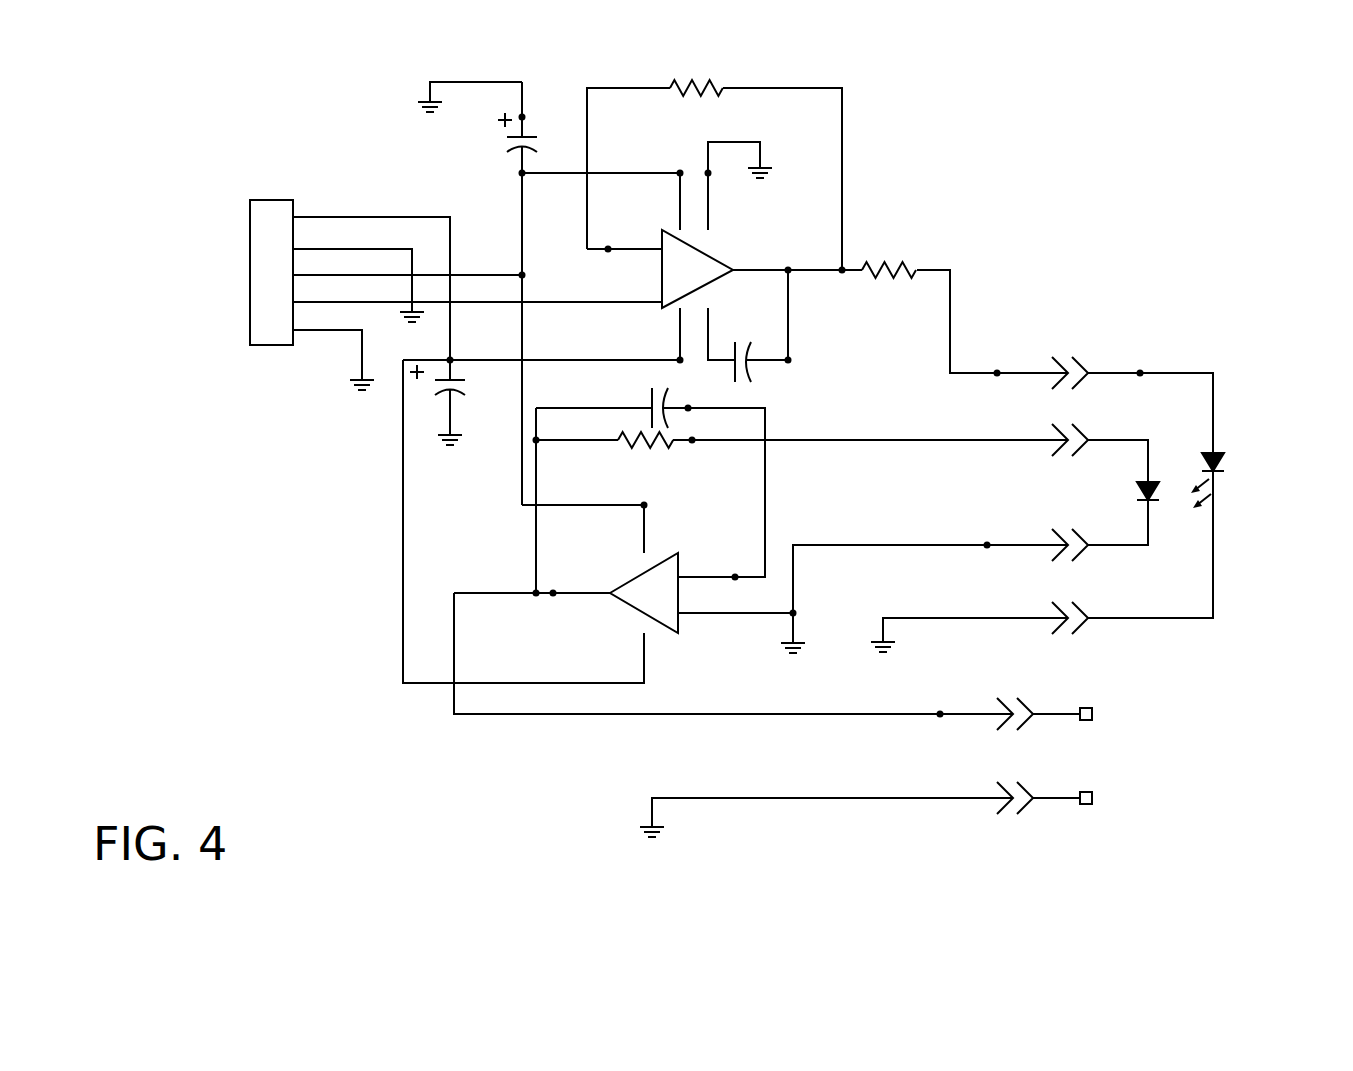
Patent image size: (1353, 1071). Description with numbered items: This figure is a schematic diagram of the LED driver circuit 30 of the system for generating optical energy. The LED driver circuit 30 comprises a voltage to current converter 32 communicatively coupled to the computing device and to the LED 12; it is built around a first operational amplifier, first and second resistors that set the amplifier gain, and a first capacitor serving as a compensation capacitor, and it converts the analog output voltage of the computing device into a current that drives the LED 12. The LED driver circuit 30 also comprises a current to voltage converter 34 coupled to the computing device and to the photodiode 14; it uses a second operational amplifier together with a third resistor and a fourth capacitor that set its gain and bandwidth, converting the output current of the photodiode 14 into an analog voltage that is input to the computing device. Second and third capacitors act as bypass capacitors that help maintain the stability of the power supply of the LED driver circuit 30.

The LED driver circuit 30 is at (938, 97).
The voltage to current converter 32 is at (867, 160).
The current to voltage converter 34 is at (382, 537).
The LED 12 is at (1259, 477).
The photodiode 14 is at (1117, 504).